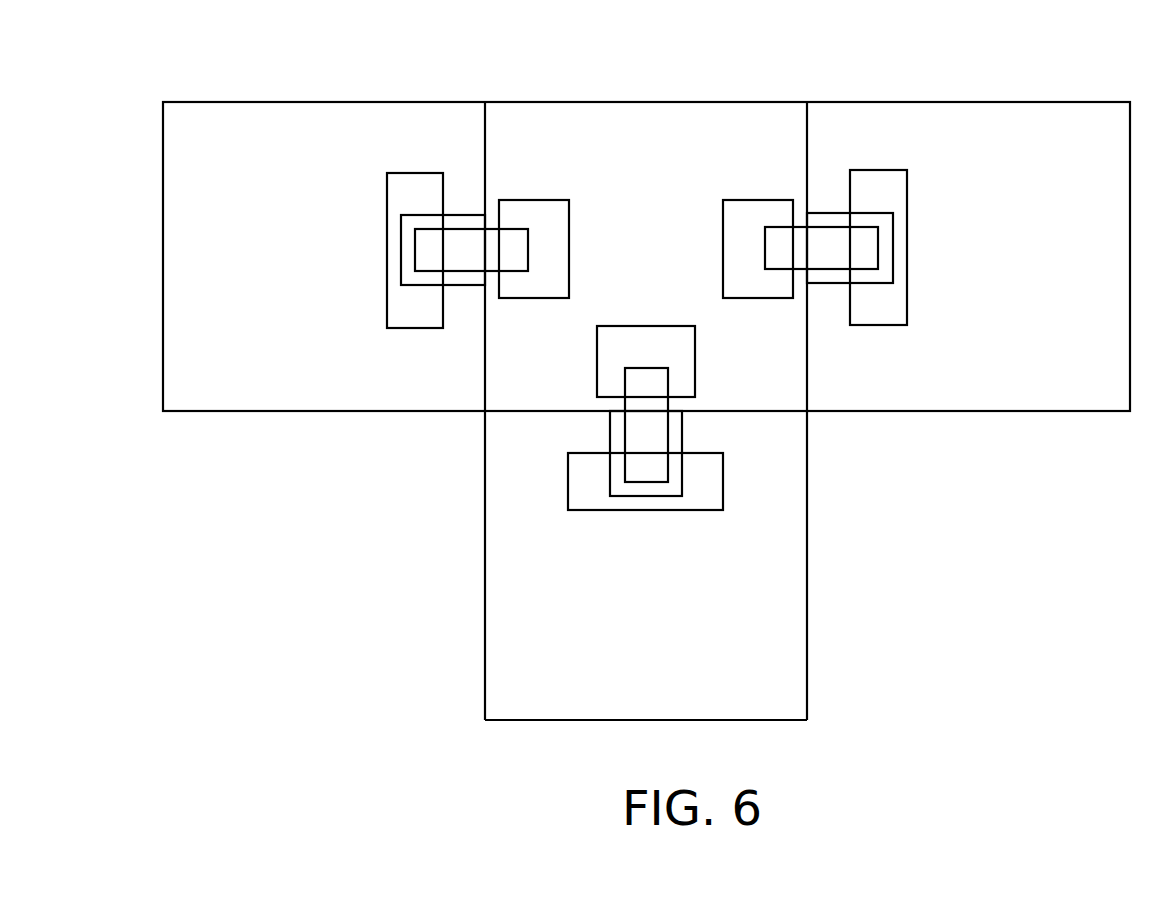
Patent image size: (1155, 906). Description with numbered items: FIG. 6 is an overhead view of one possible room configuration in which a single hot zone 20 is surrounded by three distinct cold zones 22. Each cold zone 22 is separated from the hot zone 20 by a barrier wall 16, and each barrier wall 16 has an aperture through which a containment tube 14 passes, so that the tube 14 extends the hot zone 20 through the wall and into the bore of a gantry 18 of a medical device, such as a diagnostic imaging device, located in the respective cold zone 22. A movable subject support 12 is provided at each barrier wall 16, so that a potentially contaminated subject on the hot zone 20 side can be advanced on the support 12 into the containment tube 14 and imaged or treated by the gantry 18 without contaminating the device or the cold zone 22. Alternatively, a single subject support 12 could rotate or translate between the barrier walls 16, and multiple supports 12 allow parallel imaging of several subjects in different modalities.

The subject support 12 is at (748, 240).
The containment tube 14 is at (468, 213).
The barrier wall 16 is at (485, 140).
The gantry 18 is at (414, 328).
The hot zone 20 is at (657, 170).
The cold zone 22 is at (290, 272).